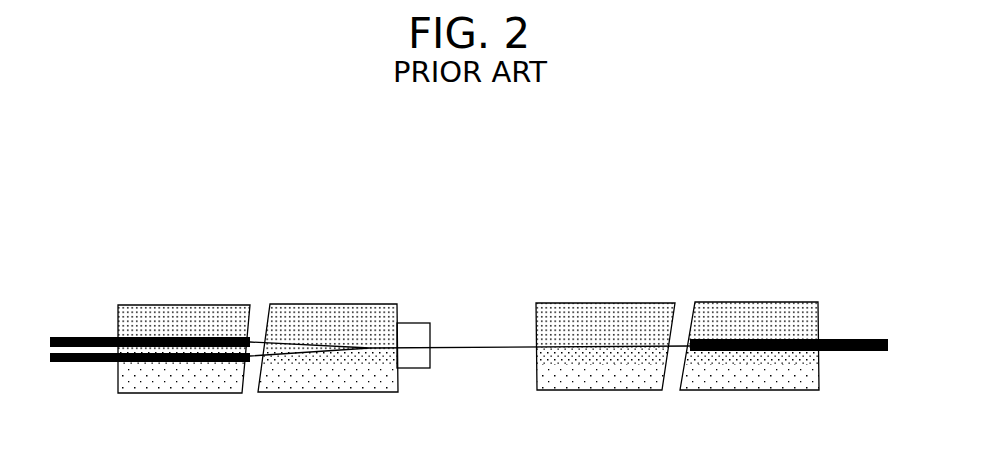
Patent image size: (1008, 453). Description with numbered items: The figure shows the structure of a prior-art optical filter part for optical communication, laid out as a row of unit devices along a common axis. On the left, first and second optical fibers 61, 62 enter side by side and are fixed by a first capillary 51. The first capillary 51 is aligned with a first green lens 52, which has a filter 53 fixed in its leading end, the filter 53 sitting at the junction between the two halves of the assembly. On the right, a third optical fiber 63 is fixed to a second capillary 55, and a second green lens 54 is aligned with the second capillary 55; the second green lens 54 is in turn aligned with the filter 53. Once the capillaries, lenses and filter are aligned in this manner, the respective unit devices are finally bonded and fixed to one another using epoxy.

The first capillary 51 is at (180, 312).
The first green lens 52 is at (316, 312).
The filter 53 is at (411, 332).
The second green lens 54 is at (580, 318).
The second capillary 55 is at (742, 318).
The first optical fiber 61 is at (52, 335).
The second optical fiber 62 is at (48, 360).
The third optical fiber 63 is at (882, 338).